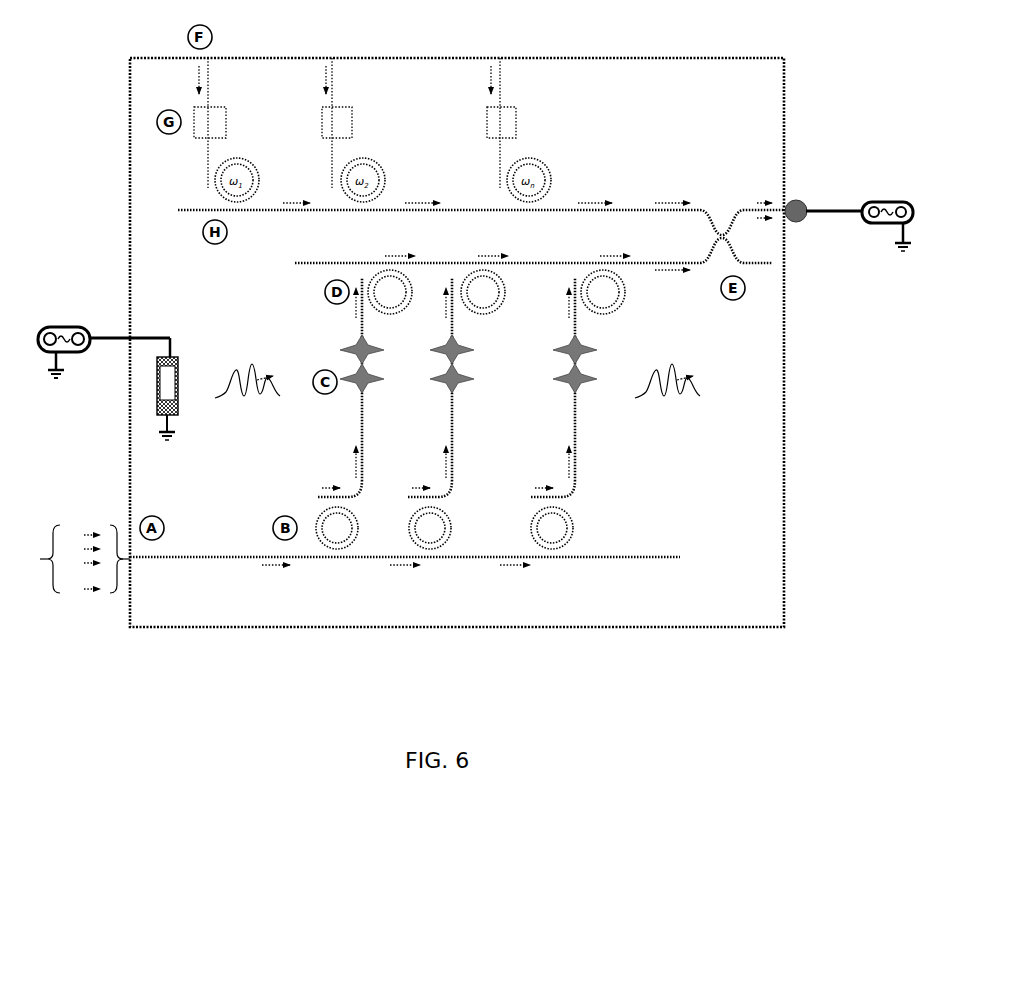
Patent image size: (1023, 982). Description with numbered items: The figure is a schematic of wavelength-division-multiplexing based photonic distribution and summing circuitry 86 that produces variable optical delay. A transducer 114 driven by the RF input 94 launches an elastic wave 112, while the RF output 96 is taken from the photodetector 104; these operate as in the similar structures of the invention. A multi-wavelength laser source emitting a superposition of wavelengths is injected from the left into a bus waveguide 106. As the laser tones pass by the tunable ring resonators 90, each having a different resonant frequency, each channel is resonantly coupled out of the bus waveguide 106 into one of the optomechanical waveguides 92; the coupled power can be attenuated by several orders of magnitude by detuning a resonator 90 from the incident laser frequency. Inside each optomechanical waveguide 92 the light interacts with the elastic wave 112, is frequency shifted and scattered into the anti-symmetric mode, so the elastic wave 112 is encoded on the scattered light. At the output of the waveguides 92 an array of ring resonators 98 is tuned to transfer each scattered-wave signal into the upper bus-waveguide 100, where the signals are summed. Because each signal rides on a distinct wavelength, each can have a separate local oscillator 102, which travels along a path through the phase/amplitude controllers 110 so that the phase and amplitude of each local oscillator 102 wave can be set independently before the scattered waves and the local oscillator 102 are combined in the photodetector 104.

The photonic distribution and summing circuitry 86 is at (400, 56).
The tunable ring resonators 90 is at (535, 543).
The optomechanical waveguides 92 is at (368, 454).
The RF input 94 is at (104, 331).
The RF output 96 is at (896, 201).
The ring resonators 98 is at (500, 280).
The upper bus-waveguide 100 is at (302, 261).
The local oscillator 102 is at (676, 158).
The photodetector 104 is at (801, 229).
The bus waveguide 106 is at (211, 562).
The phase/amplitude controller 110 is at (189, 140).
The elastic wave 112 is at (454, 415).
The transducer 114 is at (184, 366).